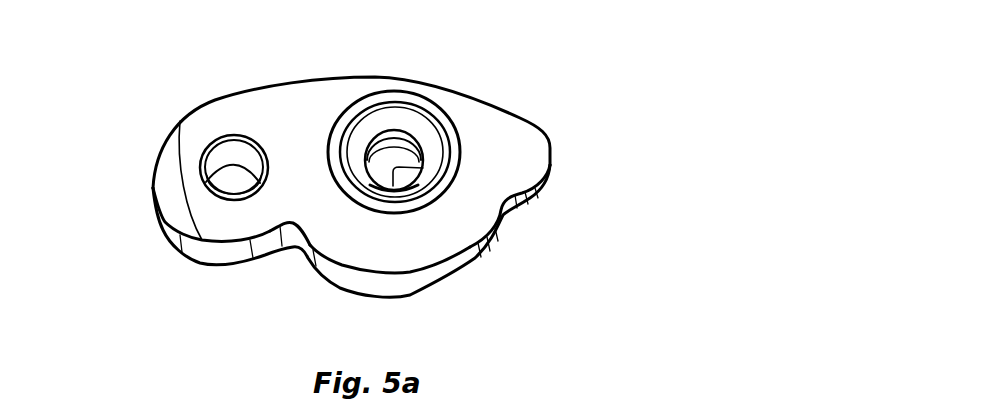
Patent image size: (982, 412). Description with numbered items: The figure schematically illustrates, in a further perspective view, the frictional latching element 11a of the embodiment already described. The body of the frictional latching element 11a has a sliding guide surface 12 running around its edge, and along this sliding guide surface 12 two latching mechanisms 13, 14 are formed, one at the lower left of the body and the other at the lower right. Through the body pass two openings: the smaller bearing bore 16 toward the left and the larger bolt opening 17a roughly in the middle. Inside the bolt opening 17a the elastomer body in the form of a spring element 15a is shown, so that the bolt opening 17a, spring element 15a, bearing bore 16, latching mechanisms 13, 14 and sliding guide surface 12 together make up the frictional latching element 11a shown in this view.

The frictional latching element 11a is at (124, 55).
The sliding guide surface 12 is at (400, 278).
The latching mechanism 13 is at (313, 259).
The latching mechanism 14 is at (507, 223).
The spring element 15a is at (398, 163).
The bearing bore 16 is at (230, 175).
The bolt opening 17a is at (393, 158).